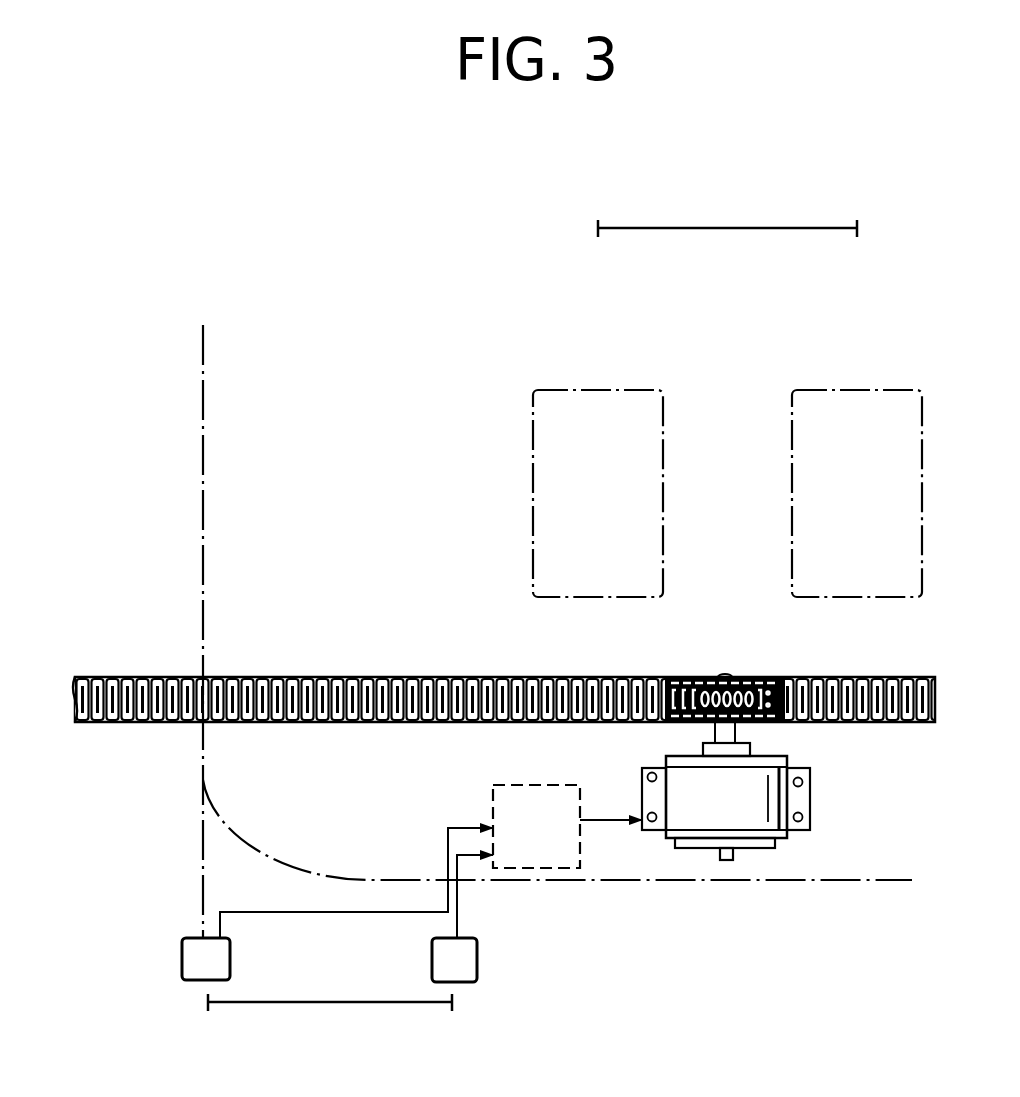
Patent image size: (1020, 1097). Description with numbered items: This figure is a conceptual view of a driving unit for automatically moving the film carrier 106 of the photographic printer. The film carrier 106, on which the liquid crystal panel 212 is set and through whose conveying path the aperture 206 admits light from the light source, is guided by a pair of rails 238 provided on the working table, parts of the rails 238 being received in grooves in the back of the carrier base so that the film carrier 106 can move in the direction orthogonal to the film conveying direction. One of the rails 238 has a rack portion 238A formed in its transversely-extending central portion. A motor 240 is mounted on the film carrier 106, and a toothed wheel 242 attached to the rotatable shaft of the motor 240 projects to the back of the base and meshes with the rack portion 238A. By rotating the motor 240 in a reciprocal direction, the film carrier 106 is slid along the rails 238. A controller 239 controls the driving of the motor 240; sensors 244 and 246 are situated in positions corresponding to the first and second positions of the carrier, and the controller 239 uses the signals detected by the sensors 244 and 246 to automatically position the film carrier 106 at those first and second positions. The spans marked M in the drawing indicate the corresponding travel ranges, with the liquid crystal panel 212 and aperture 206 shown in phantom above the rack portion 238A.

The film carrier 106 is at (200, 462).
The liquid crystal panel 212 is at (662, 412).
The aperture 206 is at (918, 412).
The rails 238 is at (110, 727).
The rack portion 238A is at (341, 676).
The toothed wheel 242 is at (725, 673).
The motor 240 is at (810, 800).
The controller 239 is at (540, 870).
The sensor 244 is at (193, 983).
The sensor 246 is at (477, 960).
The measurement span M is at (708, 226).